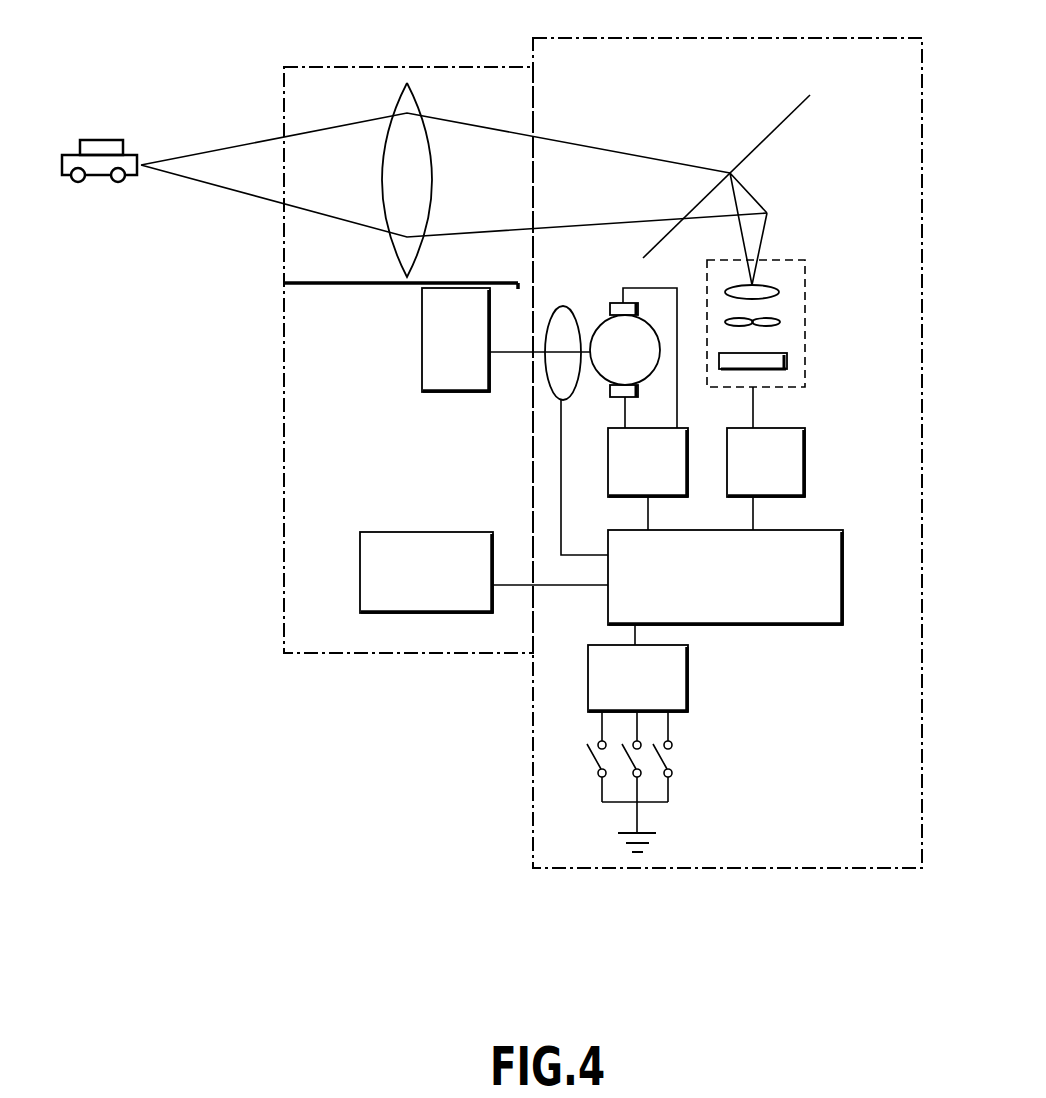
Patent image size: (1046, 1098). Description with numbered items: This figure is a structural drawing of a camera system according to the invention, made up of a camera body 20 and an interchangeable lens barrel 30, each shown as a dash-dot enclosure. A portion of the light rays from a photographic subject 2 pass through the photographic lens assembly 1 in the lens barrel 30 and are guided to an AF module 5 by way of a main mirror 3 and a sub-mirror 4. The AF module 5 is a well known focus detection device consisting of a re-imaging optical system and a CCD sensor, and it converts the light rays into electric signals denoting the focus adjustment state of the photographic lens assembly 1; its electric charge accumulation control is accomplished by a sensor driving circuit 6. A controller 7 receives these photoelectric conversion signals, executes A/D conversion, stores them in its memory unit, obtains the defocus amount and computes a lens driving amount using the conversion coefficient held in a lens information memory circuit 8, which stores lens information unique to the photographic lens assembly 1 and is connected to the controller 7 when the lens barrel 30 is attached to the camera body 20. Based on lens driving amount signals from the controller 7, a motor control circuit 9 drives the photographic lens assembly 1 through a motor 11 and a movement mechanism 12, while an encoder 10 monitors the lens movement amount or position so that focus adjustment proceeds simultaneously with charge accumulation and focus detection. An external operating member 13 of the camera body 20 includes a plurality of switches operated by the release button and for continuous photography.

The photographic lens assembly 1 is at (402, 100).
The photographic subject 2 is at (107, 140).
The main mirror 3 is at (752, 151).
The sub-mirror 4 is at (757, 205).
The AF module 5 is at (805, 318).
The sensor driving circuit 6 is at (775, 490).
The controller 7 is at (734, 611).
The lens information memory circuit 8 is at (434, 588).
The motor control circuit 9 is at (657, 490).
The encoder 10 is at (555, 392).
The motor 11 is at (617, 303).
The movement mechanism 12 is at (472, 356).
The external operating member 13 is at (654, 700).
The camera body 20 is at (655, 873).
The interchangeable lens barrel 30 is at (382, 660).